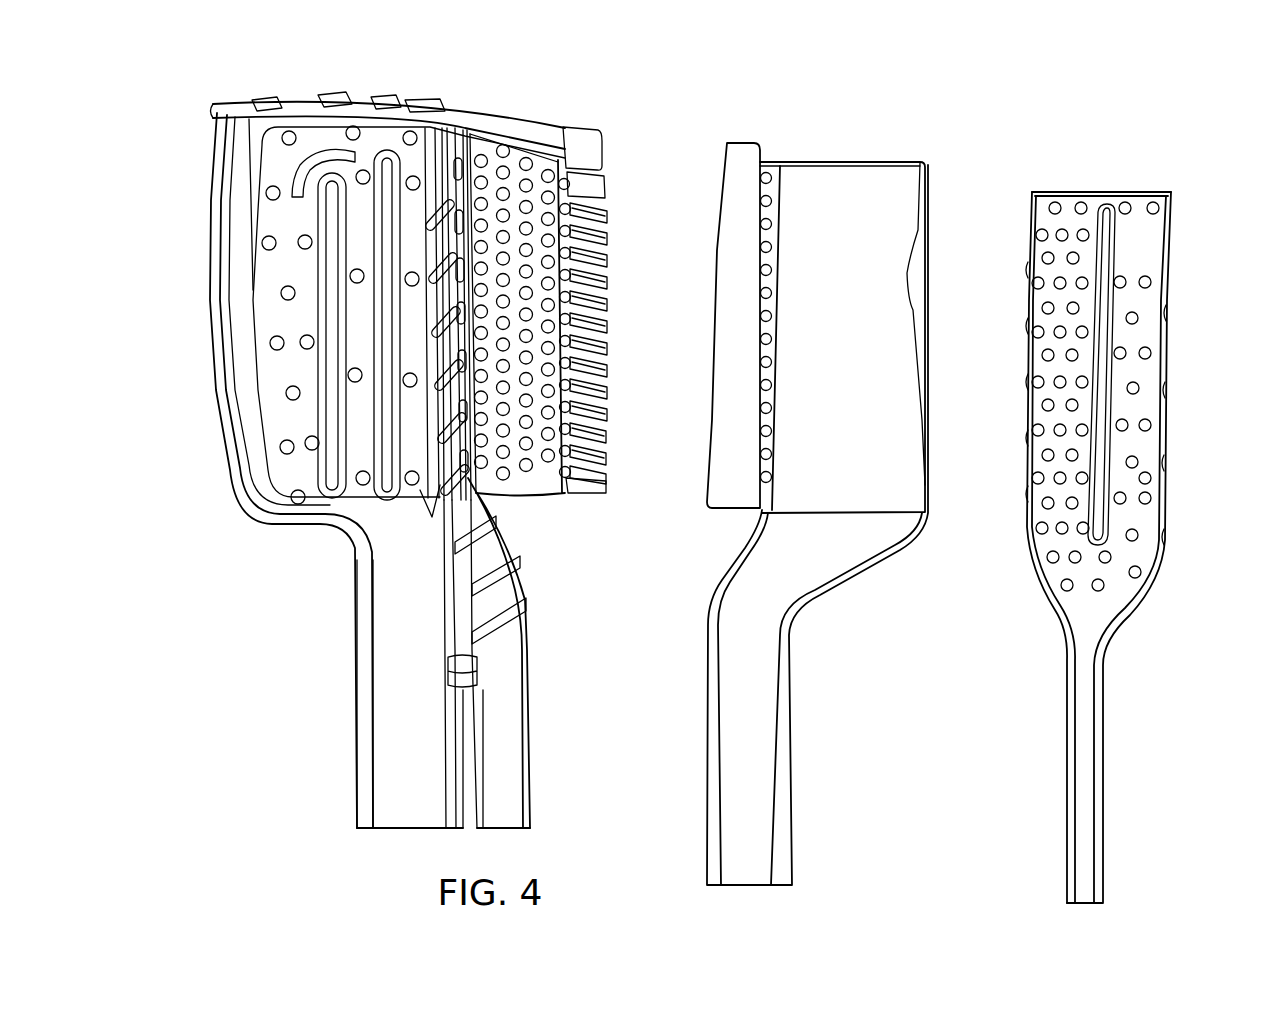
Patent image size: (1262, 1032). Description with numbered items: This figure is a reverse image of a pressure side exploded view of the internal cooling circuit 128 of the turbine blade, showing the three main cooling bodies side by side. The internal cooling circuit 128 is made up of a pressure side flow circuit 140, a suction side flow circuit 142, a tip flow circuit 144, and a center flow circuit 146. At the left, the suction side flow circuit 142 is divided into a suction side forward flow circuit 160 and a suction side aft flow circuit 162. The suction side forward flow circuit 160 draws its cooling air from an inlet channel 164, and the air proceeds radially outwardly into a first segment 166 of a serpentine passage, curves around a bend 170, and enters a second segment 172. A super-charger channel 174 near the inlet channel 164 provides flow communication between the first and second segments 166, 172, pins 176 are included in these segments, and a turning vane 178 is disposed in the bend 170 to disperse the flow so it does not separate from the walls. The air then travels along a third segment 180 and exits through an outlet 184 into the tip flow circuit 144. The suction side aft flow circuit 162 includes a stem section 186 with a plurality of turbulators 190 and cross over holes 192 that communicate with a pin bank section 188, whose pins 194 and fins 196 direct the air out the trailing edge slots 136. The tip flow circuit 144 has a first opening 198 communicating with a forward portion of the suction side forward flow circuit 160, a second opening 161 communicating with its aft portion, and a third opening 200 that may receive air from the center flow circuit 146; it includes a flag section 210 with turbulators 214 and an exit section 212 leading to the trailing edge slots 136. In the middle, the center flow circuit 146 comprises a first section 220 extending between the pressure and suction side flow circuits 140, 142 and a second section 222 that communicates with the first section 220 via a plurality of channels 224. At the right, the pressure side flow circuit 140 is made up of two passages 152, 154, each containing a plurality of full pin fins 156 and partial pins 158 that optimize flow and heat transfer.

The internal cooling circuit 128 is at (973, 160).
The trailing edge slots 136 is at (610, 478).
The pressure side flow circuit 140 is at (1167, 270).
The suction side flow circuit 142 is at (205, 222).
The tip flow circuit 144 is at (208, 71).
The center flow circuit 146 is at (928, 220).
The passage 152 is at (1040, 528).
The passage 154 is at (1147, 478).
The full pin fins 156 is at (1056, 202).
The partial pins 158 is at (1103, 255).
The suction side forward flow circuit 160 is at (275, 542).
The second opening 161 is at (431, 134).
The suction side aft flow circuit 162 is at (558, 506).
The inlet channel 164 is at (357, 730).
The first segment 166 is at (345, 455).
The bend 170 is at (333, 137).
The second segment 172 is at (300, 427).
The super-charger channel 174 is at (330, 503).
The pins 176 is at (348, 374).
The turning vane 178 is at (322, 146).
The third segment 180 is at (212, 298).
The outlet 184 is at (212, 117).
The stem section 186 is at (455, 230).
The pin bank section 188 is at (610, 183).
The turbulators 190 is at (432, 455).
The cross over holes 192 is at (489, 444).
The pins 194 is at (528, 162).
The fins 196 is at (574, 452).
The first opening 198 is at (213, 104).
The third opening 200 is at (825, 162).
The flag section 210 is at (270, 100).
The exit section 212 is at (577, 142).
The turbulators 214 is at (378, 112).
The first section 220 is at (862, 190).
The second section 222 is at (742, 152).
The channels 224 is at (770, 316).